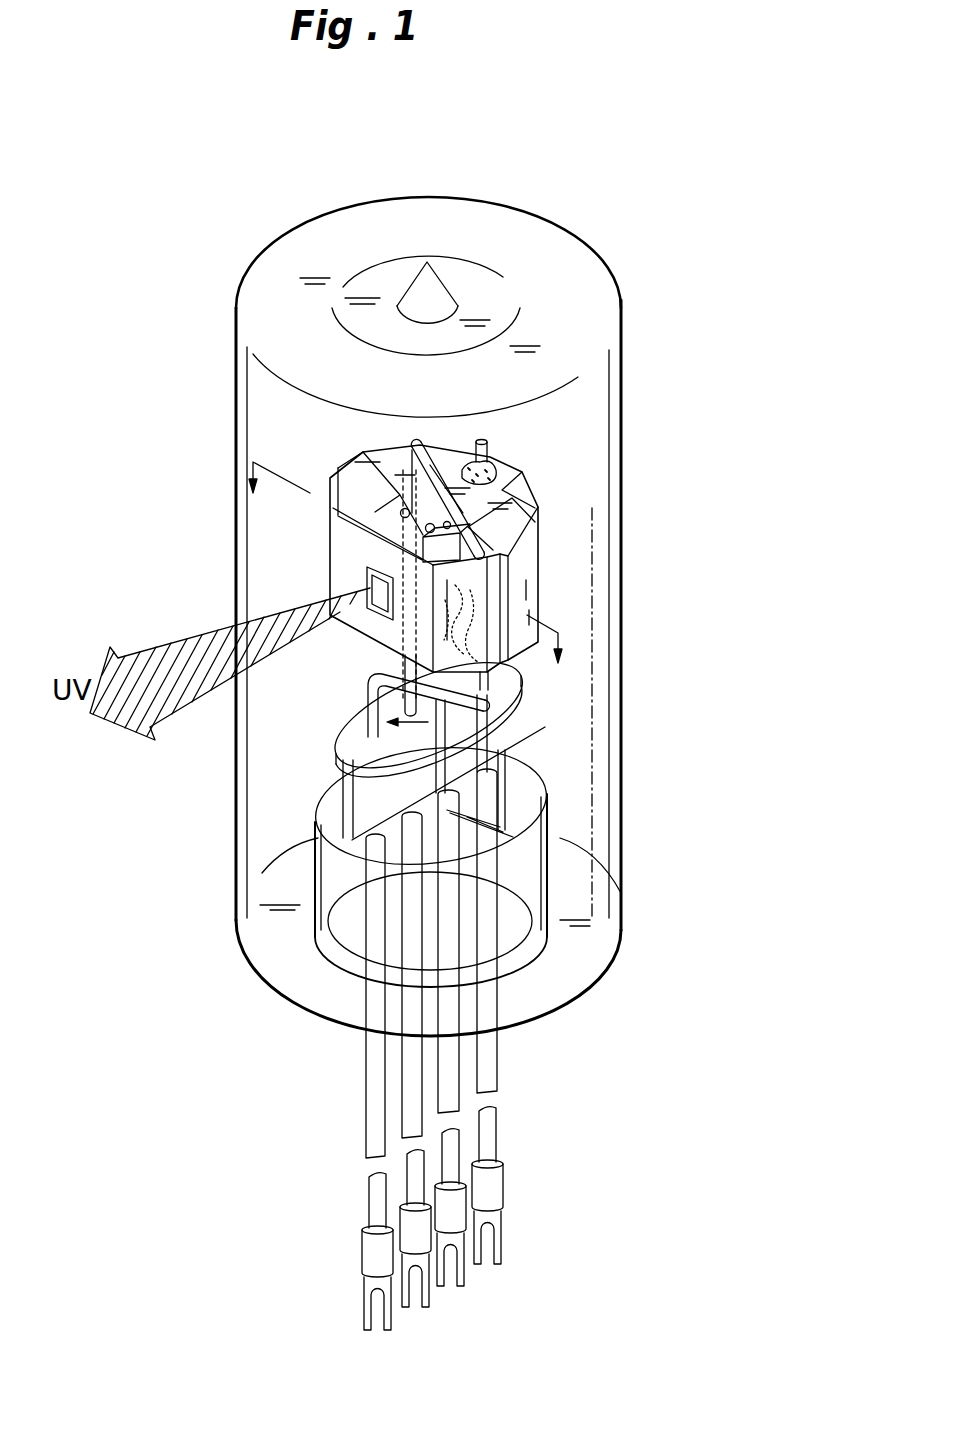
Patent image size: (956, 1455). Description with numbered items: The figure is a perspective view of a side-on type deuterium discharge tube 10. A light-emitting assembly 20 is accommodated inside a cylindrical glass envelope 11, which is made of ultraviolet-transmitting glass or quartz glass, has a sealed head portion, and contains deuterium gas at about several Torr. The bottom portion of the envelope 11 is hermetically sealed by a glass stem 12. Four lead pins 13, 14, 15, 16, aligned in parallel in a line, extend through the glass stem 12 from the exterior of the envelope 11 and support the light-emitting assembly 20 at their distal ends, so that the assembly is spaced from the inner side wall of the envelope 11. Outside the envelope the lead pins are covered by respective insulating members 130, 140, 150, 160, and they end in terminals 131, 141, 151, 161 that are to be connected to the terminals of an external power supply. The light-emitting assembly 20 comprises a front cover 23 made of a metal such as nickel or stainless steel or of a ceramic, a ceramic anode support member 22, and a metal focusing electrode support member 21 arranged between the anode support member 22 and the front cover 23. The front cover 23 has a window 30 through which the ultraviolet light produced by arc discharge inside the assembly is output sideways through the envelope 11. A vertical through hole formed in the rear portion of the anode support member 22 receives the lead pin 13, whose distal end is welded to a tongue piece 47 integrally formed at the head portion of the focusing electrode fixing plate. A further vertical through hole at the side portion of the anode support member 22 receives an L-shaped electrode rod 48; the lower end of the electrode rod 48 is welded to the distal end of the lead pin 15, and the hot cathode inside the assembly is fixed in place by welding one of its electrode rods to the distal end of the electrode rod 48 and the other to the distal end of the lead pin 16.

The deuterium discharge tube 10 is at (637, 212).
The glass envelope 11 is at (615, 387).
The glass stem 12 is at (527, 803).
The lead pin 13 is at (490, 446).
The lead pin 14 is at (442, 765).
The lead pin 15 is at (412, 777).
The lead pin 16 is at (372, 803).
The light-emitting assembly 20 is at (683, 460).
The focusing electrode support member 21 is at (523, 560).
The anode support member 22 is at (523, 471).
The front cover 23 is at (490, 632).
The window 30 is at (367, 610).
The tongue piece 47 is at (433, 440).
The L-shaped electrode rod 48 is at (438, 518).
The insulating member 130 is at (487, 1053).
The insulating member 140 is at (450, 1078).
The insulating member 150 is at (413, 1060).
The insulating member 160 is at (378, 1108).
The terminal 131 is at (507, 1238).
The terminal 141 is at (465, 1273).
The terminal 151 is at (430, 1305).
The terminal 161 is at (395, 1325).